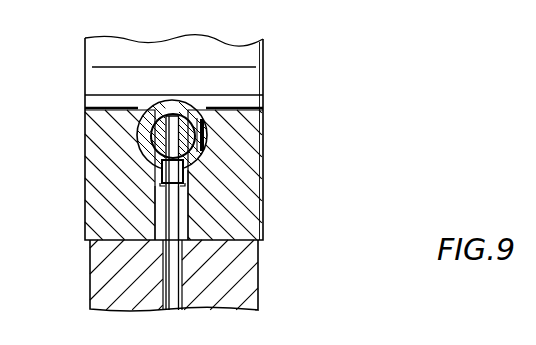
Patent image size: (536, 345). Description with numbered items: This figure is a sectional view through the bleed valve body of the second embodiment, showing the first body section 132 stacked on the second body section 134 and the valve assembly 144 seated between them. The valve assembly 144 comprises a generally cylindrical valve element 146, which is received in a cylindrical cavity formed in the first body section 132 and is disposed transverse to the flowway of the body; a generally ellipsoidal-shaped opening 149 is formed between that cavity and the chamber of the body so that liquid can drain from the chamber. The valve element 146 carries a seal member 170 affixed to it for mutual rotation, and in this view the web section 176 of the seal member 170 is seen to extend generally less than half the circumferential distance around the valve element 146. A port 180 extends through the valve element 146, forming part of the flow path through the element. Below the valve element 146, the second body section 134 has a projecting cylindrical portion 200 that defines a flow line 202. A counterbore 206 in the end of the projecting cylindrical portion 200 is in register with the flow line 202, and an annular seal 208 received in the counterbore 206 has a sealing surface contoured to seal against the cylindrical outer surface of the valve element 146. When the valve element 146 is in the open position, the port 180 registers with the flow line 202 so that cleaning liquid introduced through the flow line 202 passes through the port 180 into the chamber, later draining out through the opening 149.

The first body section 132 is at (253, 164).
The second body section 134 is at (238, 287).
The valve assembly 144 is at (196, 98).
The valve element 146 is at (151, 133).
The opening 149 is at (157, 105).
The seal member 170 is at (203, 107).
The web section 176 is at (206, 142).
The port 180 is at (175, 113).
The projecting cylindrical portion 200 is at (184, 218).
The flow line 202 is at (160, 205).
The counterbore 206 is at (192, 178).
The annular seal 208 is at (160, 165).